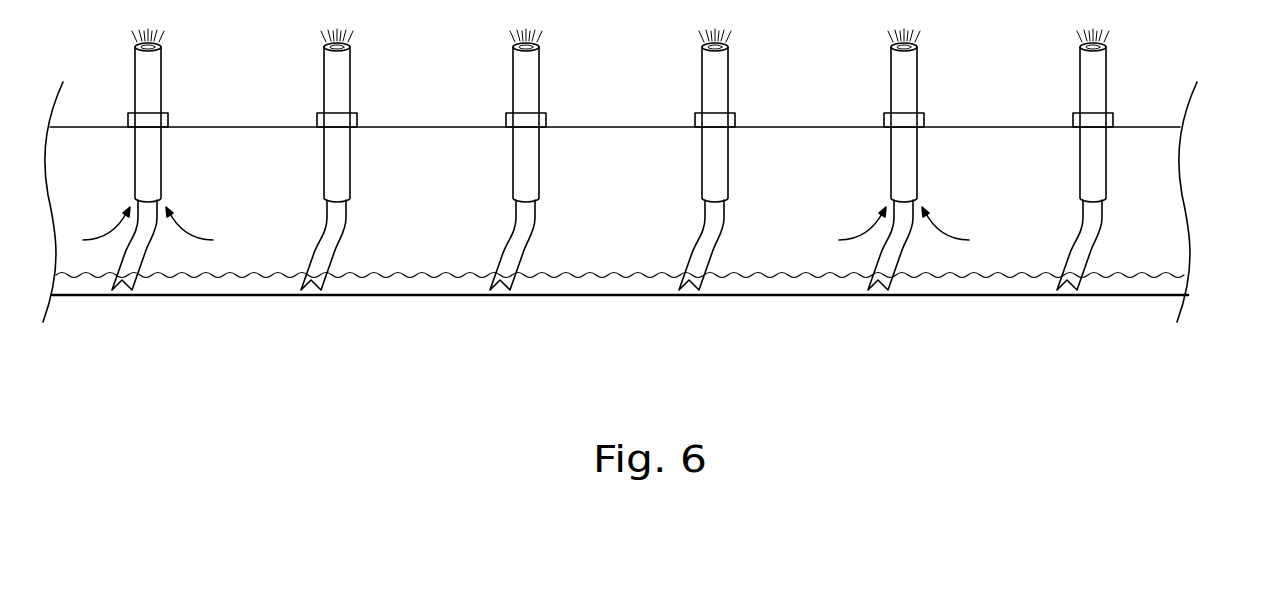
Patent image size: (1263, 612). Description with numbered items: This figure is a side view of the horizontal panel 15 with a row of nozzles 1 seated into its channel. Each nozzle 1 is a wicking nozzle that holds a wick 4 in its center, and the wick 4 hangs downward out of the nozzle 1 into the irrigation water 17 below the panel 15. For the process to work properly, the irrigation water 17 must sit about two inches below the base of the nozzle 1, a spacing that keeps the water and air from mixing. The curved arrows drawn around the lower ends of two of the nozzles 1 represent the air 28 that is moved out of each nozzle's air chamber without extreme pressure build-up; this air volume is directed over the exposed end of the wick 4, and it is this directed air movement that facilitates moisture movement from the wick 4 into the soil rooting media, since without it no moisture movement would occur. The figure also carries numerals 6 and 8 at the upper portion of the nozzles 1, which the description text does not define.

The nozzle 1 is at (549, 159).
The wick 4 is at (354, 245).
The mounting flange 6 is at (743, 89).
The spray outlet 8 is at (372, 34).
The horizontal panel 15 is at (1170, 208).
The irrigation water 17 is at (947, 283).
The air moved out of air chamber 28 is at (526, 198).